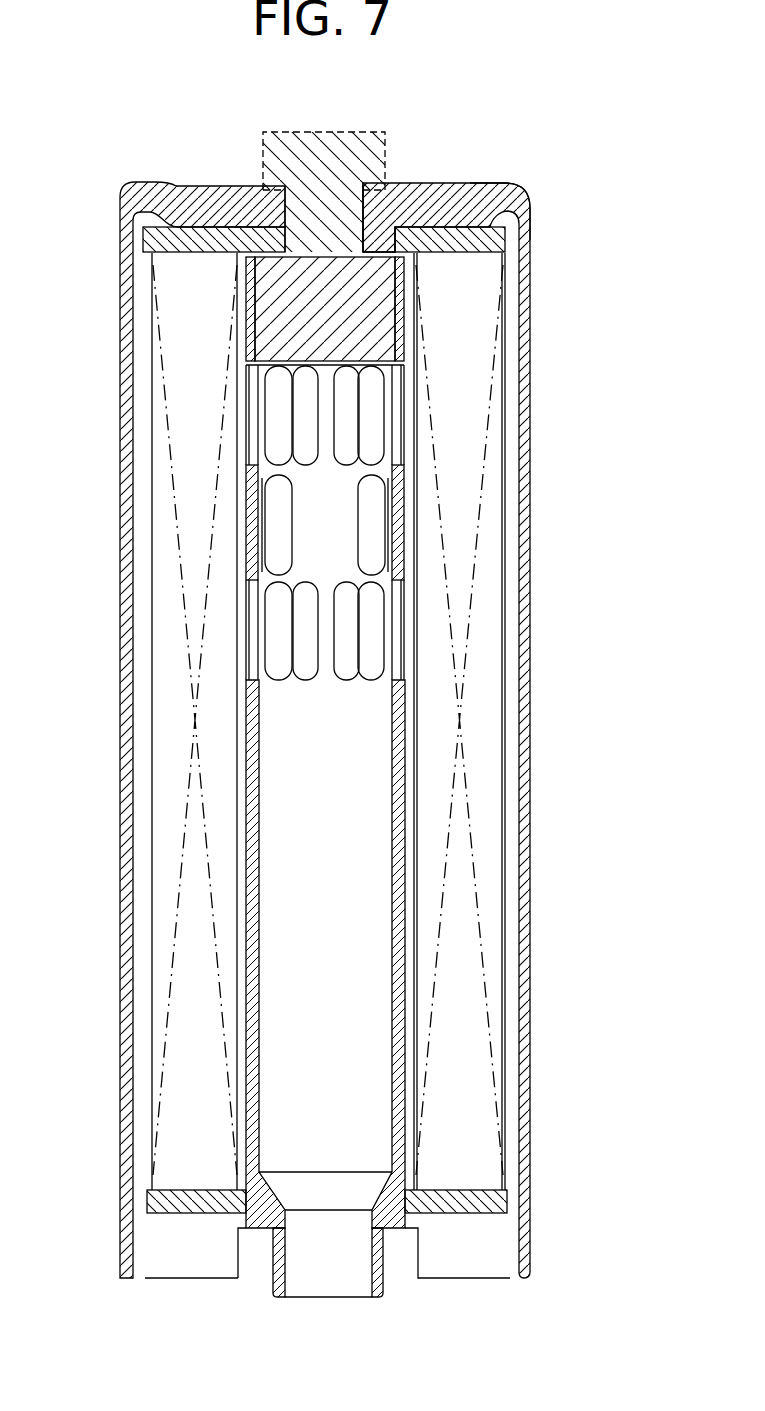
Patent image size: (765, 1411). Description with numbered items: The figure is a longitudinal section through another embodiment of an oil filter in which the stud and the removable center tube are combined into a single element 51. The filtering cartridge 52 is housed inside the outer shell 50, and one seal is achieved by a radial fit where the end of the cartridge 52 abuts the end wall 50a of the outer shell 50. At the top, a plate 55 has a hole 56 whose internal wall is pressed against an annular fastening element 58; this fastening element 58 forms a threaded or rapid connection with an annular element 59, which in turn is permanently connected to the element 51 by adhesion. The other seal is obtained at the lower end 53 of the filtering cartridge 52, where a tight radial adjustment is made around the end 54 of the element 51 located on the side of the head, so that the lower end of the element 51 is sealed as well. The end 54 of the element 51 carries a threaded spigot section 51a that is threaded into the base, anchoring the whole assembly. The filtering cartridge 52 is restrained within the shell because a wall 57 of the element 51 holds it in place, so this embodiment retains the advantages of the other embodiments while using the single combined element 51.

The outer shell 50 is at (533, 766).
The end wall 50a is at (505, 183).
The combined stud and center tube element 51 is at (395, 1220).
The threaded spigot section 51a is at (384, 1267).
The filtering cartridge 52 is at (455, 438).
The lower end of the filtering cartridge 53 is at (452, 1103).
The end of element 51 54 is at (248, 1220).
The plate 55 is at (497, 238).
The hole of plate 56 is at (383, 240).
The wall of element 51 57 is at (398, 312).
The annular fastening element 58 is at (290, 161).
The annular element 59 is at (277, 302).